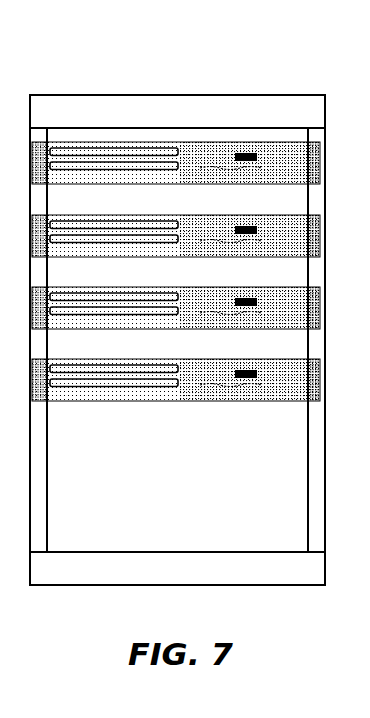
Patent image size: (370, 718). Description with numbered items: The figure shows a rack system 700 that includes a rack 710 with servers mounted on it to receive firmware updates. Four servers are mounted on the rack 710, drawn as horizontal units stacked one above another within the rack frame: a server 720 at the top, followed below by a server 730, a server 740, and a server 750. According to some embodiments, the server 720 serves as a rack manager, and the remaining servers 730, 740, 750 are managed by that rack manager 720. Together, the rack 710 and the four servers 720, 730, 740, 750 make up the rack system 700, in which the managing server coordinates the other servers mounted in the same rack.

The rack system 700 is at (181, 52).
The rack 710 is at (237, 93).
The server 720 is at (113, 186).
The server 730 is at (113, 258).
The server 740 is at (113, 330).
The server 750 is at (113, 402).